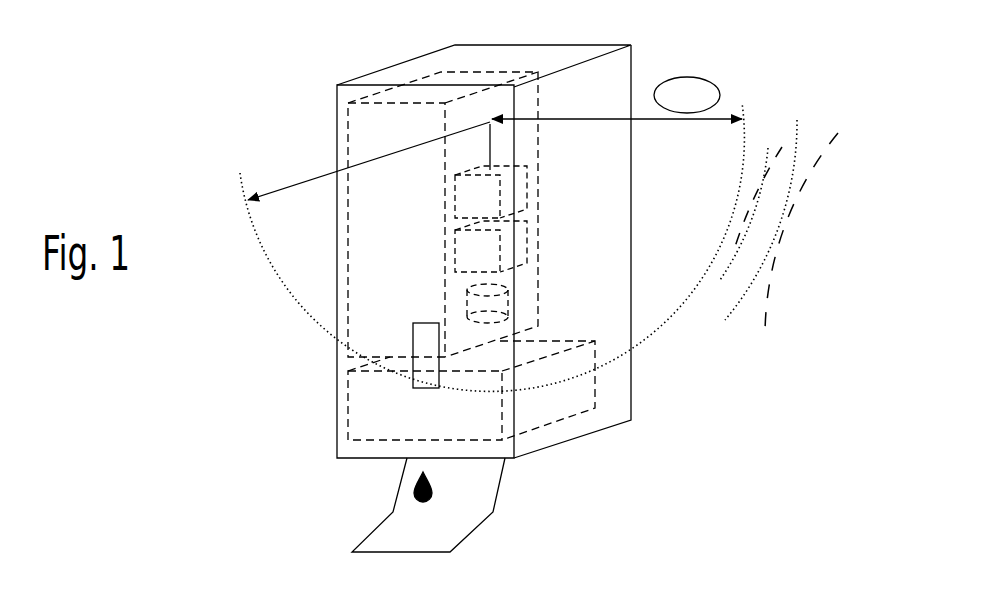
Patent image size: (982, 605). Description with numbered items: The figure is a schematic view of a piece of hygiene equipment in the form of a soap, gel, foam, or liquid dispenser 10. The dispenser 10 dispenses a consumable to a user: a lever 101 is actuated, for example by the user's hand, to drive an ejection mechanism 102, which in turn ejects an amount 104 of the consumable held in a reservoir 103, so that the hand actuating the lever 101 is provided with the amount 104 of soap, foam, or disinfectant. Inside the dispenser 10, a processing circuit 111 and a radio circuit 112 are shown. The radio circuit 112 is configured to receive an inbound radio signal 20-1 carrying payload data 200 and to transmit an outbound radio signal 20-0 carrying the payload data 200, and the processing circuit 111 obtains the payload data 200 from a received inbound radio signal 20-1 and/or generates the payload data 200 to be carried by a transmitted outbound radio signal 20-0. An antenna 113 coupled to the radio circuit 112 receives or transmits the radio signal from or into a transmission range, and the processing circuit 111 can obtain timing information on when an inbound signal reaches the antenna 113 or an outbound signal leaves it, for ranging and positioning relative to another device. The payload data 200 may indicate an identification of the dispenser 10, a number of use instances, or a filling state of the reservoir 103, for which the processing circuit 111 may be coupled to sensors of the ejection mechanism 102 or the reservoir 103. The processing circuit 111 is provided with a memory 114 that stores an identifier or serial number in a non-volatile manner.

The dispenser 10 is at (337, 370).
The lever 101 is at (472, 533).
The ejection mechanism 102 is at (348, 410).
The reservoir 103 is at (348, 125).
The amount of consumable 104 is at (418, 483).
The processing circuit 111 is at (528, 233).
The radio circuit 112 is at (528, 177).
The antenna 113 is at (487, 120).
The memory 114 is at (510, 302).
The payload data 200 is at (717, 84).
The outbound radio signal 20-0 is at (662, 305).
The inbound radio signal 20-1 is at (815, 160).